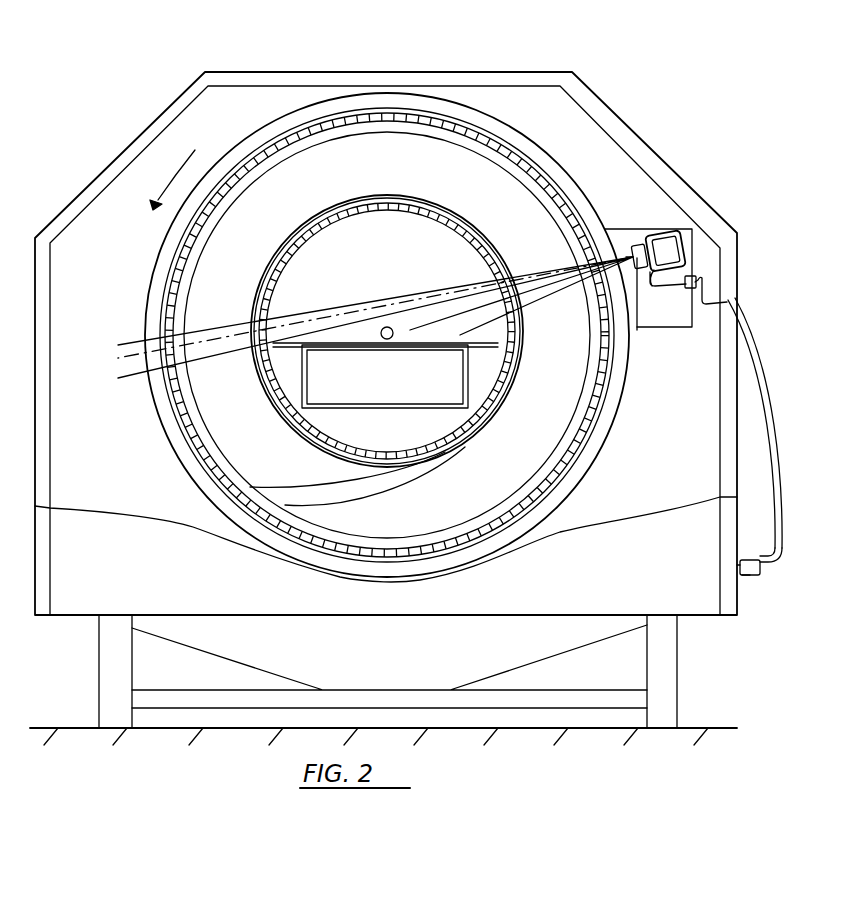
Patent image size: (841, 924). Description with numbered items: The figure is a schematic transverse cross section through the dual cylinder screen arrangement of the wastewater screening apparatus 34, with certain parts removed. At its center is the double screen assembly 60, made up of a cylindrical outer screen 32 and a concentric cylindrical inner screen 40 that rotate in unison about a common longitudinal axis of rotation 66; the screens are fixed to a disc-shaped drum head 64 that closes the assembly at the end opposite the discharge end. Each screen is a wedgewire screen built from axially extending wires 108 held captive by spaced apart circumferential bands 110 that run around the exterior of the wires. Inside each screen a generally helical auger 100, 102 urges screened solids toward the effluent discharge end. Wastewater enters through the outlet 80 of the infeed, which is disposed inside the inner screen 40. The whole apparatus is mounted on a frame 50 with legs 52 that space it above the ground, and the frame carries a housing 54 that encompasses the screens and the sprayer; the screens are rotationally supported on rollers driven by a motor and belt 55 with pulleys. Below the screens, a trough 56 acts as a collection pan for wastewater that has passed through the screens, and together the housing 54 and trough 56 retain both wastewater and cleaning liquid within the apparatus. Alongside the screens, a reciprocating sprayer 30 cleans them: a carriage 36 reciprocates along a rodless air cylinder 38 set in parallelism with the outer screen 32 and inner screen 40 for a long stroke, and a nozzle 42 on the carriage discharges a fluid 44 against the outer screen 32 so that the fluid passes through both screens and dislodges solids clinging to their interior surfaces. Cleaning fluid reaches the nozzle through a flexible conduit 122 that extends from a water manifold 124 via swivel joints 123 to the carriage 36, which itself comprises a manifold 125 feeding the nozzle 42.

The reciprocating sprayer 30 is at (669, 218).
The outer screen 32 is at (531, 158).
The wastewater screening apparatus 34 is at (471, 112).
The carriage 36 is at (651, 232).
The rodless air cylinder 38 is at (682, 245).
The inner screen 40 is at (411, 211).
The nozzle 42 is at (637, 330).
The fluid 44 is at (522, 268).
The frame 50 is at (100, 630).
The legs 52 is at (677, 668).
The housing 54 is at (626, 120).
The belt 55 is at (700, 270).
The trough 56 is at (525, 643).
The double screen assembly 60 is at (277, 100).
The drum head 64 is at (568, 373).
The longitudinal axis of rotation 66 is at (392, 328).
The outlet 80 is at (472, 395).
The auger 100 is at (517, 493).
The auger 102 is at (393, 497).
The wires 108 is at (345, 205).
The bands 110 is at (310, 218).
The flexible conduit 122 is at (756, 383).
The swivel joints 123 is at (705, 283).
The water manifold 124 is at (745, 575).
The manifold 125 is at (637, 248).